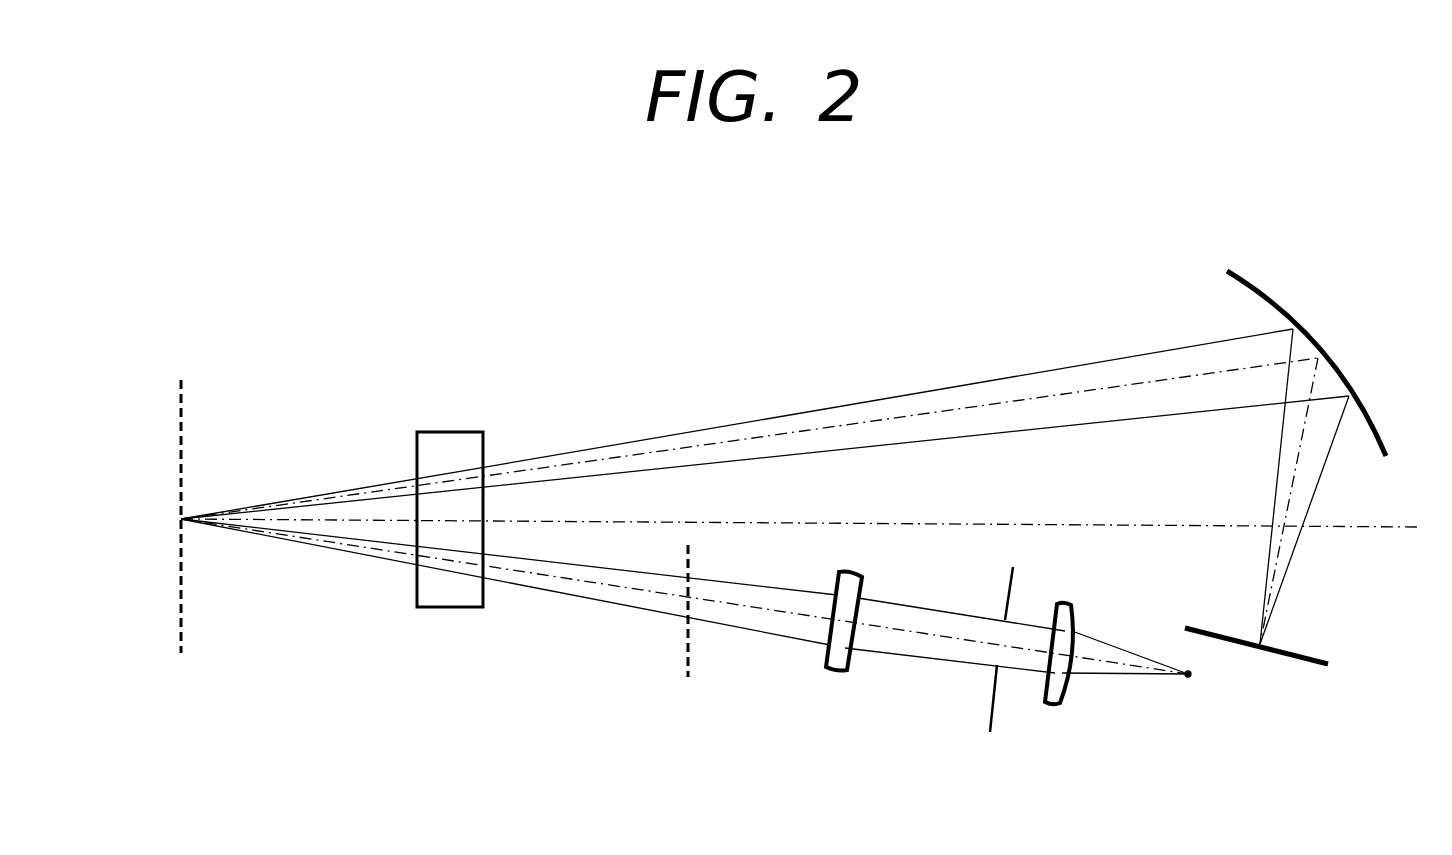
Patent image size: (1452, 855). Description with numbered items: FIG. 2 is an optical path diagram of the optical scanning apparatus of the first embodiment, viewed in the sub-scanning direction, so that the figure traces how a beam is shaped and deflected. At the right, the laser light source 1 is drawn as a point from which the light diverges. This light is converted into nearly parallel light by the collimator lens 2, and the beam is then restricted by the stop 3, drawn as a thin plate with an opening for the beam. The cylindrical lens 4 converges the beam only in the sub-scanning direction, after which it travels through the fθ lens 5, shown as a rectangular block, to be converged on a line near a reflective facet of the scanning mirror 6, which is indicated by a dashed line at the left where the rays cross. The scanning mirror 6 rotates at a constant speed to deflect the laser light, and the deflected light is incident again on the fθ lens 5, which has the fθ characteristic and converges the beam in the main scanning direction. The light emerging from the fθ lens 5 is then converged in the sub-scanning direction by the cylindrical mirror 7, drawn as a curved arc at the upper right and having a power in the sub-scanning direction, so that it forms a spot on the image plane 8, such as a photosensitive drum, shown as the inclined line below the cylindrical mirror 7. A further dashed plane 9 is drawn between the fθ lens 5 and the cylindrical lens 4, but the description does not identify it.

The laser light source 1 is at (1190, 680).
The collimator lens 2 is at (1062, 690).
The stop 3 is at (993, 710).
The cylindrical lens 4 is at (848, 662).
The fθ lens 5 is at (457, 432).
The scanning mirror 6 is at (183, 395).
The cylindrical mirror 7 is at (1257, 287).
The image plane 8 is at (1317, 665).
The intermediate plane 9 is at (690, 657).